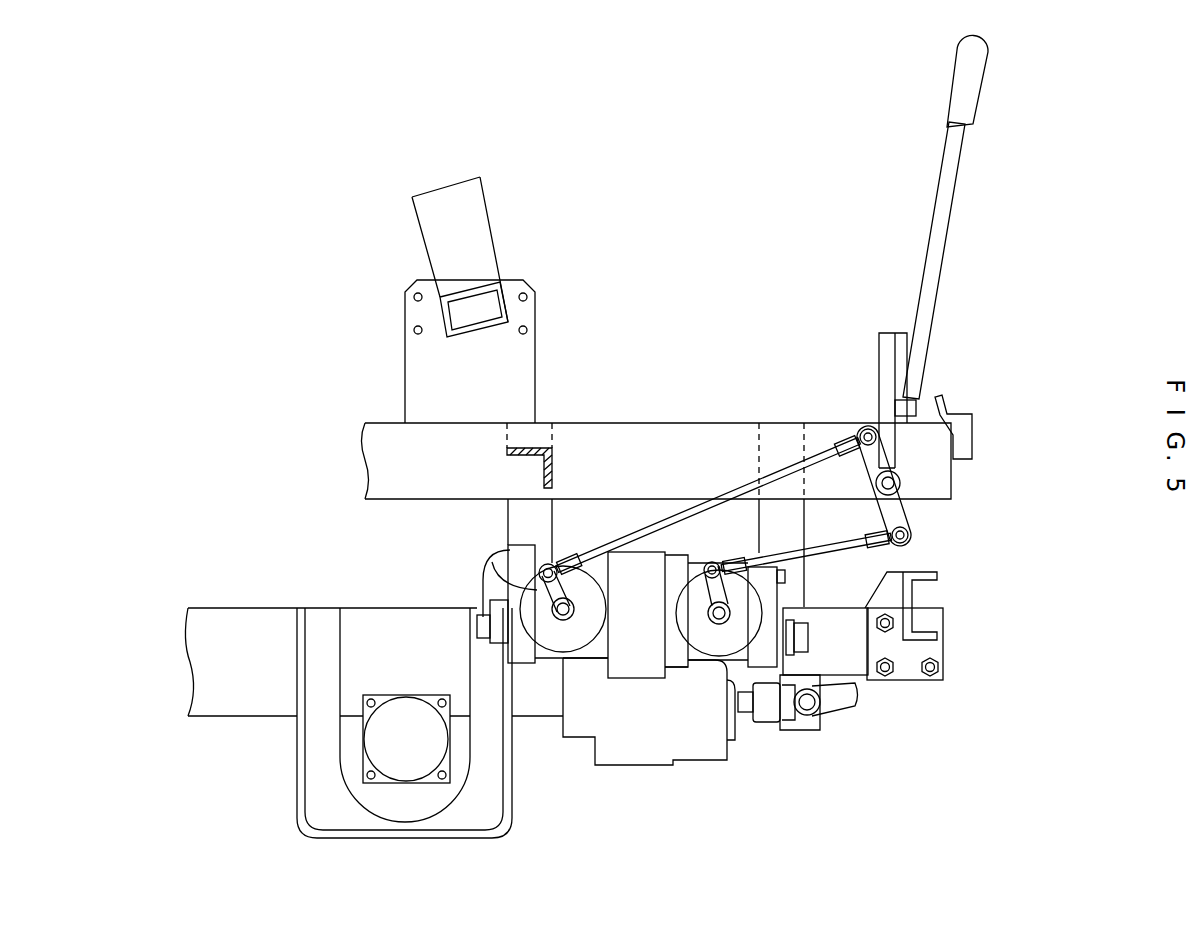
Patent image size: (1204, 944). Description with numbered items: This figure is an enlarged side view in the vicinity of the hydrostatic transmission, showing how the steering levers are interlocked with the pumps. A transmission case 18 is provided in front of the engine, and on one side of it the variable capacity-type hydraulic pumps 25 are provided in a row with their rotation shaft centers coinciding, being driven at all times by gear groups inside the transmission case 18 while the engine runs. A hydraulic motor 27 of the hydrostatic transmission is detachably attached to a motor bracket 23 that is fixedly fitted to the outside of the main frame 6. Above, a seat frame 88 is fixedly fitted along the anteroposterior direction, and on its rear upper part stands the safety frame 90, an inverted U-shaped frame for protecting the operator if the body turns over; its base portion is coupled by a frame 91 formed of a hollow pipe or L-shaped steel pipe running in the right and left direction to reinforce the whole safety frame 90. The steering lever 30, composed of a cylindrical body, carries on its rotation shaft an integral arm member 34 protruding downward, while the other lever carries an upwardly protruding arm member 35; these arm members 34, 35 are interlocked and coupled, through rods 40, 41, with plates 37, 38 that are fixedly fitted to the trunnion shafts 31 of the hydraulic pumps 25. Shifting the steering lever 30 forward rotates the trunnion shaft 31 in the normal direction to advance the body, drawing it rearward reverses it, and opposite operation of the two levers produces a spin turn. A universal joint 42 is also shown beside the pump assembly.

The main frame 6 is at (232, 705).
The transmission case 18 is at (654, 738).
The motor bracket 23 is at (480, 838).
The hydraulic pump 25 is at (597, 650).
The hydraulic motor 27 is at (405, 705).
The steering lever 30 is at (948, 213).
The trunnion shaft 31 is at (560, 622).
The arm member 34 is at (903, 512).
The arm member 35 is at (872, 458).
The plate 37 is at (708, 590).
The plate 38 is at (490, 563).
The rod 40 is at (830, 547).
The rod 41 is at (601, 468).
The universal joint 42 is at (745, 712).
The seat frame 88 is at (642, 432).
The safety frame 90 is at (482, 233).
The frame 91 is at (508, 310).